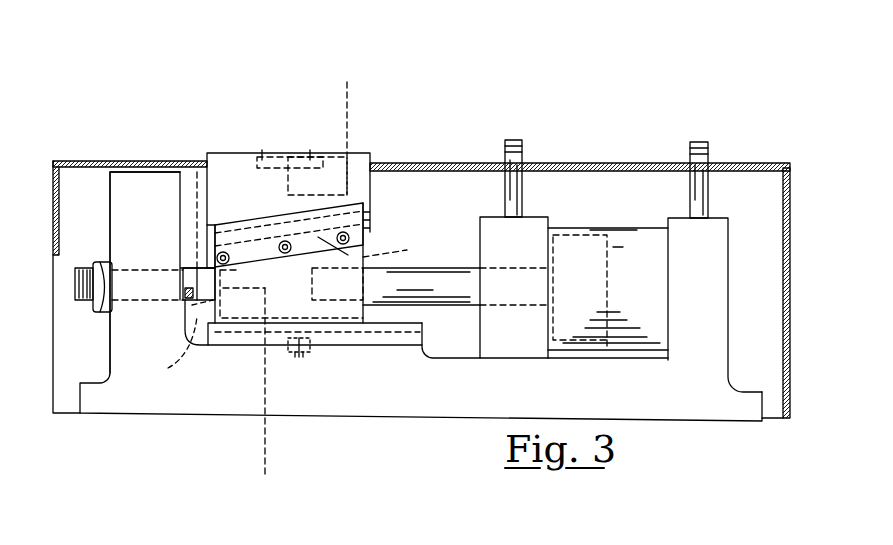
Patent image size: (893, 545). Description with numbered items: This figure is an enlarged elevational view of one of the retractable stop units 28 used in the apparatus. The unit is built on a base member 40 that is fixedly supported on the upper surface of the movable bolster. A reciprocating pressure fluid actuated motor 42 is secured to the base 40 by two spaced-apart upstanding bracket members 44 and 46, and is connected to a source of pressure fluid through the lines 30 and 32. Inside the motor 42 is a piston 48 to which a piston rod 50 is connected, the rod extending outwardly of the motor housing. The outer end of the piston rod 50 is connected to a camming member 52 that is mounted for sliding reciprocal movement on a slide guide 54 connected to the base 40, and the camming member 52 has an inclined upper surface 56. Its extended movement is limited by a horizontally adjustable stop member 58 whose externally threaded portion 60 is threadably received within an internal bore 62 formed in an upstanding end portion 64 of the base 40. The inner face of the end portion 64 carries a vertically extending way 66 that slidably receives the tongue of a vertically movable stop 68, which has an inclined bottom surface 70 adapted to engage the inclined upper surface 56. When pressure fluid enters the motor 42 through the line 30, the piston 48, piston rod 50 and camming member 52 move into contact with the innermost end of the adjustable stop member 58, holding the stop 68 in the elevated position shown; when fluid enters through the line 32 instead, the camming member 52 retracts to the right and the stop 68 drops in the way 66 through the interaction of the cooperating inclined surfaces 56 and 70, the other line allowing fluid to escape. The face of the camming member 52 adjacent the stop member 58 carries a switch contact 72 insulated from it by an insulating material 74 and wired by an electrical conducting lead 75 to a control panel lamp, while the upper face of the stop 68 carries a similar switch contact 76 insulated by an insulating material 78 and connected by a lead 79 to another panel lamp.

The stop unit 28 is at (120, 151).
The line 30 is at (690, 160).
The line 32 is at (523, 150).
The base member 40 is at (207, 403).
The pressure fluid actuated motor 42 is at (628, 227).
The bracket member 44 is at (708, 232).
The bracket member 46 is at (492, 222).
The piston 48 is at (572, 233).
The piston rod 50 is at (440, 307).
The camming member 52 is at (295, 292).
The slide guide 54 is at (357, 338).
The inclined upper surface 56 is at (379, 247).
The adjustable stop member 58 is at (200, 285).
The externally threaded portion 60 is at (83, 267).
The internal bore 62 is at (150, 303).
The upstanding end portion 64 is at (127, 192).
The way 66 is at (203, 170).
The vertically movable stop 68 is at (267, 211).
The inclined bottom surface 70 is at (365, 232).
The switch contact 72 is at (192, 305).
The insulating material 74 is at (168, 370).
The electrical conducting lead 75 is at (262, 437).
The switch contact 76 is at (297, 150).
The insulating material 78 is at (260, 155).
The electrical conducting lead 79 is at (352, 128).